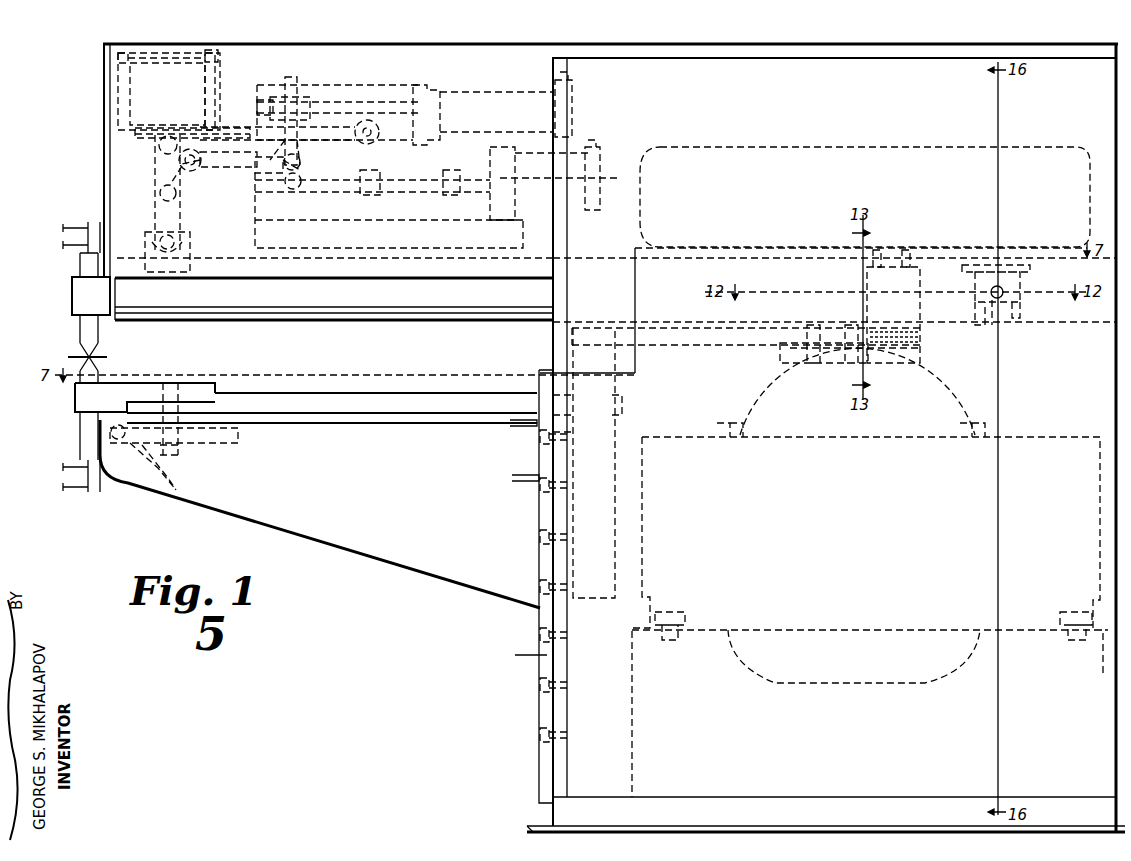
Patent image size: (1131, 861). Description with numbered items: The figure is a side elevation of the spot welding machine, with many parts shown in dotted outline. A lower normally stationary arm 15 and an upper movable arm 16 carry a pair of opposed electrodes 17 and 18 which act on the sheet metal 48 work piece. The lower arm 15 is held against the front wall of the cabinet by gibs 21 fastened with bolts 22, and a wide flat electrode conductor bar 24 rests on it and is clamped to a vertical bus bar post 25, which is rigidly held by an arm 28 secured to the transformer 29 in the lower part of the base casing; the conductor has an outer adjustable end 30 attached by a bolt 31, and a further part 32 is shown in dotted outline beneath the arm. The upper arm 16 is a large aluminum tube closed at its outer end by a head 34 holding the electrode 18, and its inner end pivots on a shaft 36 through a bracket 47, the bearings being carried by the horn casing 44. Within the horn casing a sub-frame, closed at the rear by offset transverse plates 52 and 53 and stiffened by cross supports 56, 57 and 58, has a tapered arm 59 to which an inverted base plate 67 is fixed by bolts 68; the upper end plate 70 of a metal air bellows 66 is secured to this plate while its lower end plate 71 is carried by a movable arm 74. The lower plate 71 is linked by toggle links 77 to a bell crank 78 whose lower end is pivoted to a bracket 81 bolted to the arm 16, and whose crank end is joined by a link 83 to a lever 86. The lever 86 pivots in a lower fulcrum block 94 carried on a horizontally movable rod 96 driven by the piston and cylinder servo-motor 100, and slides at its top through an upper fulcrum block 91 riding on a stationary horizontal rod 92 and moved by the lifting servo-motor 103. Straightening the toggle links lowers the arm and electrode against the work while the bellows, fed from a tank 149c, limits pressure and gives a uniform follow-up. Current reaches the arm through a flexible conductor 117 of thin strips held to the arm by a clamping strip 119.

The lower normally stationary arm 15 is at (320, 528).
The upper movable arm 16 is at (338, 322).
The lower electrode 17 is at (100, 373).
The upper electrode 18 is at (100, 335).
The gibs 21 is at (538, 656).
The bolts 22 is at (562, 630).
The electrode conductor bar 24 is at (397, 408).
The vertical bus bar post 25 is at (605, 432).
The arm 28 is at (670, 340).
The transformer 29 is at (760, 390).
The outer adjustable end 30 is at (150, 390).
The bolt 31 is at (190, 392).
The pawl 32 is at (132, 445).
The head 34 is at (80, 292).
The shaft 36 is at (1000, 298).
The horn casing 44 is at (118, 182).
The bracket 47 is at (992, 330).
The sheet metal 48 is at (86, 355).
The offset transverse plate 52 is at (420, 85).
The offset transverse plate 53 is at (495, 222).
The cross support 56 is at (268, 100).
The cross support 57 is at (265, 190).
The cross support 58 is at (372, 192).
The tapered arm 59 is at (156, 148).
The metal air bellows 66 is at (230, 87).
The inverted base plate 67 is at (168, 62).
The bolts 68 is at (130, 56).
The upper end plate 70 is at (157, 72).
The lower end plate 71 is at (196, 122).
The movable arm 74 is at (328, 136).
The toggle links 77 is at (165, 168).
The bell crank 78 is at (182, 185).
The bracket 81 is at (178, 252).
The link 83 is at (230, 160).
The lever 86 is at (298, 140).
The fulcrum block 91 is at (296, 104).
The stationary horizontal rod 92 is at (324, 106).
The fulcrum block 94 is at (306, 186).
The horizontally movable rod 96 is at (398, 180).
The piston and cylinder servo-motor 100 is at (543, 173).
The lifting servo-motor 103 is at (505, 102).
The flexible conductor 117 is at (918, 338).
The clamping strip 119 is at (912, 262).
The tank 149c is at (817, 148).